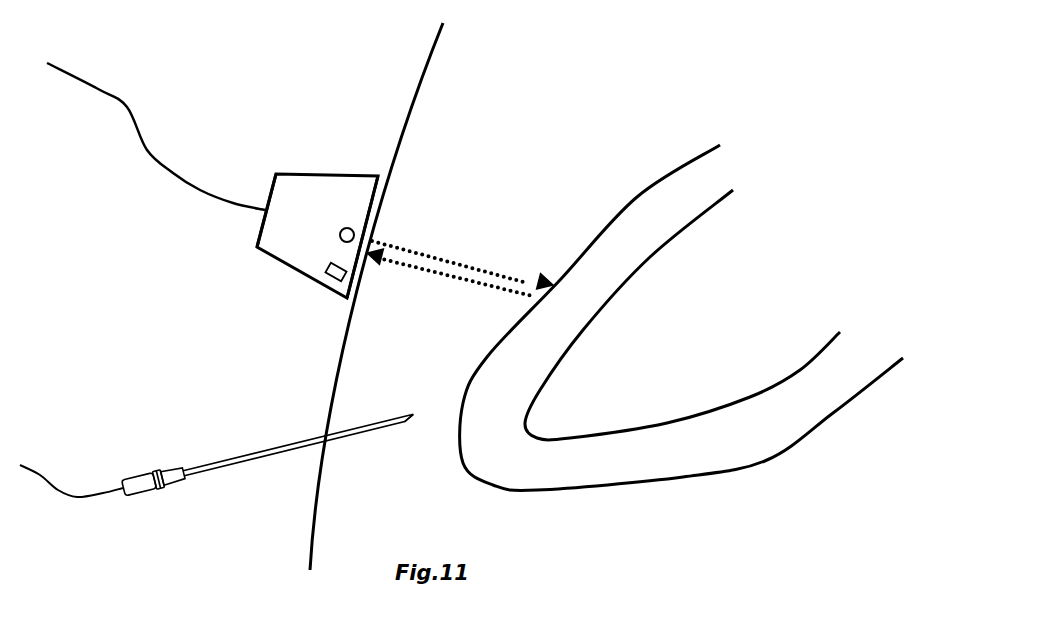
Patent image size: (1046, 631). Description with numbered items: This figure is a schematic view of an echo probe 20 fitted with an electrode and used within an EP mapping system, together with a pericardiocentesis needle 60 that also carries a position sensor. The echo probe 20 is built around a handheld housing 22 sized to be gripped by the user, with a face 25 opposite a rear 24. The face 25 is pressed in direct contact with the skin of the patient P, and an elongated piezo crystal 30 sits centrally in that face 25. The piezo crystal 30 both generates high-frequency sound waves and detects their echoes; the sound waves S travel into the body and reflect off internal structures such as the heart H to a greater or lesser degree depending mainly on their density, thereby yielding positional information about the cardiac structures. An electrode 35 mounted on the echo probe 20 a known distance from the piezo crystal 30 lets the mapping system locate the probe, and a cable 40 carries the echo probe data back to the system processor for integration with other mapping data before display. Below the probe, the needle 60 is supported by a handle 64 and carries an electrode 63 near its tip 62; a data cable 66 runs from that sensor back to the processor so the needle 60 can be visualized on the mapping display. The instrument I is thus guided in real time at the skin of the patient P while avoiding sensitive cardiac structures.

The echo probe 20 is at (324, 161).
The handheld housing 22 is at (273, 245).
The rear 24 is at (267, 195).
The face 25 is at (374, 193).
The piezo crystal 30 is at (341, 229).
The electrode 35 is at (332, 288).
The cable 40 is at (127, 107).
The needle 60 is at (235, 451).
The tip 62 is at (403, 420).
The electrode 63 is at (390, 420).
The handle 64 is at (135, 480).
The data cable 66 is at (60, 497).
The patient P is at (431, 50).
The ultrasound signal S is at (490, 283).
The heart H is at (716, 334).
The insertion point I is at (322, 433).